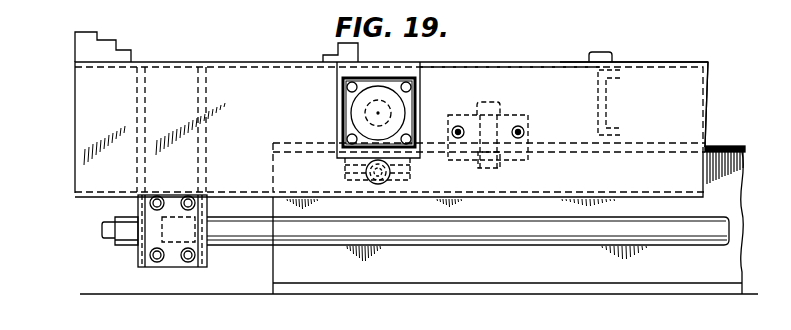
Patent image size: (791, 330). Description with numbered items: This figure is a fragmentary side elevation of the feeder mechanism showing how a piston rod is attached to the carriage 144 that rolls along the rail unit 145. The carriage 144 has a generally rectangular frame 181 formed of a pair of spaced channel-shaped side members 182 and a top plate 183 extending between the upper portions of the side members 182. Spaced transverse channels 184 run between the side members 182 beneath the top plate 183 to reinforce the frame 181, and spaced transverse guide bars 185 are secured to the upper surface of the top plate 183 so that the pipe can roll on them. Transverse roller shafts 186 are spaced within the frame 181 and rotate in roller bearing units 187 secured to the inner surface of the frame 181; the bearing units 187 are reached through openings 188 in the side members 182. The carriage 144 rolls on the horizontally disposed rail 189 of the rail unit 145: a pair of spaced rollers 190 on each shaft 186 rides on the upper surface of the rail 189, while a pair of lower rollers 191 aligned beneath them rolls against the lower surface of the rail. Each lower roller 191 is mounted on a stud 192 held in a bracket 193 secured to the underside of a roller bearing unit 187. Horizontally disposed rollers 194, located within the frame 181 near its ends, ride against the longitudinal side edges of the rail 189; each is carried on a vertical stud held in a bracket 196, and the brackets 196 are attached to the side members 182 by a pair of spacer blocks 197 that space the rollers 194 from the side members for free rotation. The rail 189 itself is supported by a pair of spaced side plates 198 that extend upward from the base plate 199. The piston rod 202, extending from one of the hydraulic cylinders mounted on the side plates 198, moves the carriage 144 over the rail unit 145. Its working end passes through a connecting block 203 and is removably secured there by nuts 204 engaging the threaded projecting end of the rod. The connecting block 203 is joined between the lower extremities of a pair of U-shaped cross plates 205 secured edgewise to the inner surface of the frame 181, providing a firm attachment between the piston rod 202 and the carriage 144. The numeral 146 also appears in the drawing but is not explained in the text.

The carriage 144 is at (666, 56).
The rail unit 145 is at (745, 143).
The stepped tabs 146 is at (70, 47).
The frame 181 is at (70, 128).
The side members 182 is at (706, 97).
The top plate 183 is at (532, 60).
The transverse channels 184 is at (607, 97).
The guide bars 185 is at (598, 51).
The roller shafts 186 is at (372, 115).
The roller bearing units 187 is at (408, 128).
The openings 188 is at (416, 97).
The rail 189 is at (713, 145).
The rollers 190 is at (349, 103).
The lower rollers 191 is at (360, 176).
The stud 192 is at (383, 181).
The bracket 193 is at (343, 164).
The horizontally disposed rollers 194 is at (490, 158).
The bracket 196 is at (502, 113).
The spacer blocks 197 is at (462, 161).
The side plates 198 is at (330, 272).
The base plate 199 is at (412, 294).
The piston rod 202 is at (249, 247).
The connecting block 203 is at (180, 270).
The nuts 204 is at (130, 246).
The U-shaped cross plates 205 is at (138, 200).